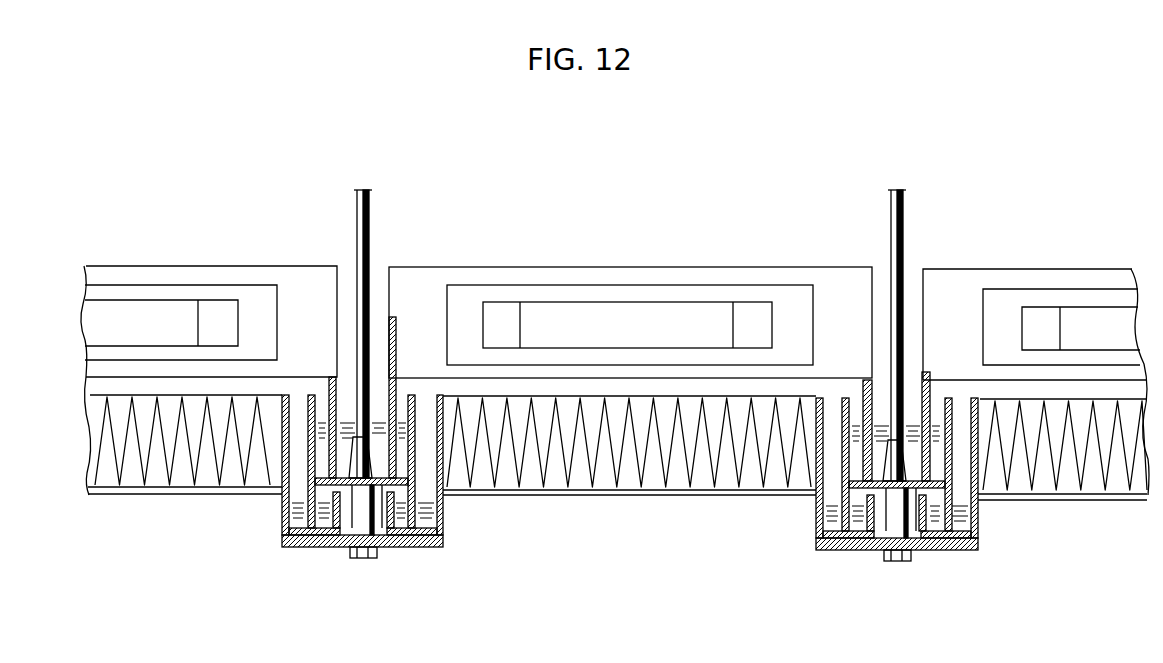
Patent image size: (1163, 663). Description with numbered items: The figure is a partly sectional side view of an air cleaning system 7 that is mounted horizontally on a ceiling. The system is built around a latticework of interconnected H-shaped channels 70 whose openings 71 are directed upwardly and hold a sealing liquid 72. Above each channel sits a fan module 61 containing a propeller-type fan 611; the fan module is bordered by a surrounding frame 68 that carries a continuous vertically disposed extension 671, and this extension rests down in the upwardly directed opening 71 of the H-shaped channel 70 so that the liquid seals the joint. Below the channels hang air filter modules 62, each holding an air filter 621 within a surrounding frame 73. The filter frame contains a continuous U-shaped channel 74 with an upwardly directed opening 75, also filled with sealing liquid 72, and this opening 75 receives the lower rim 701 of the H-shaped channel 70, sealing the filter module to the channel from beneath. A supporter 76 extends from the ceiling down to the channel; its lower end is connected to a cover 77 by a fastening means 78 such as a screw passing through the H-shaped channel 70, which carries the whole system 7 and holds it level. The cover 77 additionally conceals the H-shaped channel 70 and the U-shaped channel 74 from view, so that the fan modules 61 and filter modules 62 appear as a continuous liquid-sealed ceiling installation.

The air cleaning system 7 is at (133, 266).
The fan module 61 is at (630, 286).
The propeller-type fan 611 is at (590, 312).
The air filter module 62 is at (629, 490).
The air filter 621 is at (518, 463).
The surrounding frame 68 is at (393, 327).
The H-shaped channel 70 is at (420, 402).
The opening 71 is at (320, 395).
The sealing liquid 72 is at (318, 452).
The surrounding frame 73 is at (395, 505).
The U-shaped channel 74 is at (398, 512).
The upwardly directed opening 75 is at (421, 515).
The supporter 76 is at (358, 227).
The cover 77 is at (338, 547).
The fastening means 78 is at (363, 558).
The vertically disposed extension 671 is at (380, 355).
The lower rim 701 is at (305, 540).